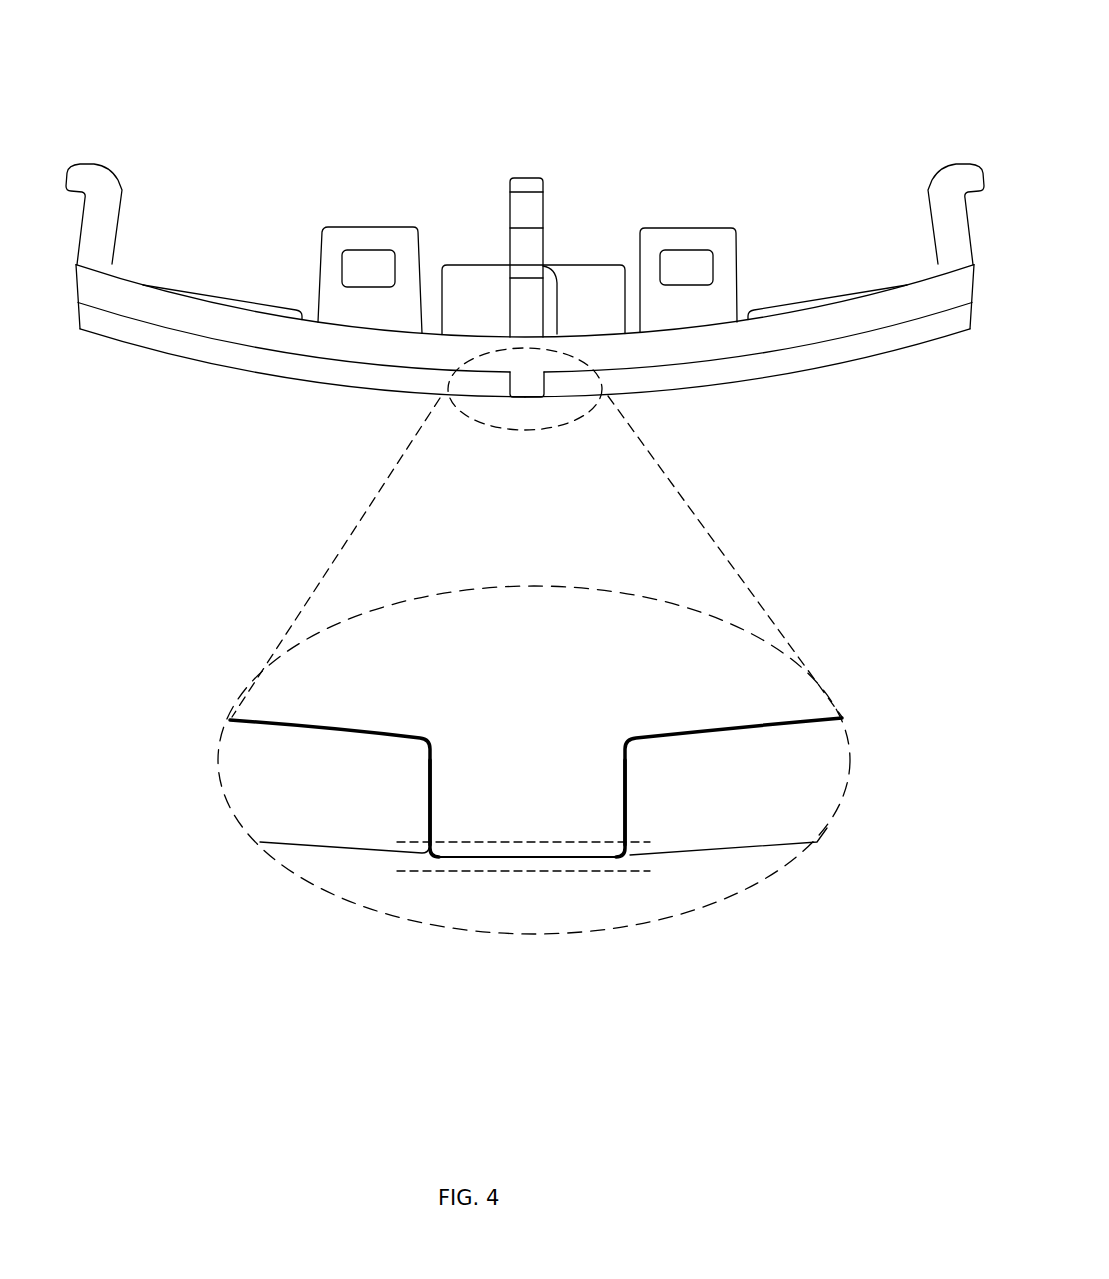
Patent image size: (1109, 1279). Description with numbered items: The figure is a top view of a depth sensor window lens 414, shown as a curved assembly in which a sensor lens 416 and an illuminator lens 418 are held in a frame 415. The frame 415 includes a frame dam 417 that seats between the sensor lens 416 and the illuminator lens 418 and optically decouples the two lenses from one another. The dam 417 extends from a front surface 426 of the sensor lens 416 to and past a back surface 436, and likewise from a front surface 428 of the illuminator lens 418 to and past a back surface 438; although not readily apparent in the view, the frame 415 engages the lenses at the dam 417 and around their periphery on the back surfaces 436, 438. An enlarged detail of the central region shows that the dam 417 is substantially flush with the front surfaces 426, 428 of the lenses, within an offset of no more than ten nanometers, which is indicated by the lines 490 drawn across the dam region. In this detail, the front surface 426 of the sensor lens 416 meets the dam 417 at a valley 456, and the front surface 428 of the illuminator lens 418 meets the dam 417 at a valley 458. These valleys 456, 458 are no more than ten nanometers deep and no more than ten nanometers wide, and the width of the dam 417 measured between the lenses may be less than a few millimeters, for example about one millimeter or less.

The depth sensor window lens 414 is at (607, 92).
The frame 415 is at (823, 327).
The sensor lens 416 is at (193, 360).
The frame dam 417 is at (527, 400).
The illuminator lens 418 is at (855, 361).
The front surface of the sensor lens 426 is at (282, 378).
The front surface of the illuminator lens 428 is at (757, 380).
The back surface of the sensor lens 436 is at (297, 356).
The back surface of the illuminator lens 438 is at (718, 360).
The valley 456 is at (503, 410).
The valley 458 is at (552, 411).
The lines 490 is at (400, 871).